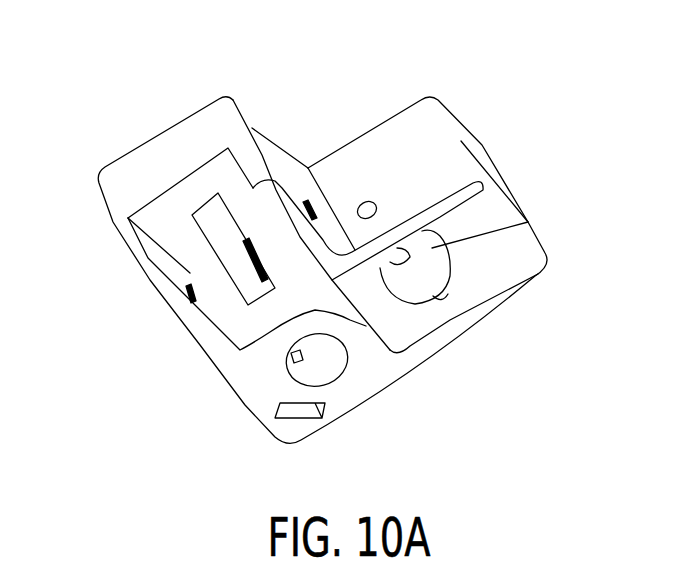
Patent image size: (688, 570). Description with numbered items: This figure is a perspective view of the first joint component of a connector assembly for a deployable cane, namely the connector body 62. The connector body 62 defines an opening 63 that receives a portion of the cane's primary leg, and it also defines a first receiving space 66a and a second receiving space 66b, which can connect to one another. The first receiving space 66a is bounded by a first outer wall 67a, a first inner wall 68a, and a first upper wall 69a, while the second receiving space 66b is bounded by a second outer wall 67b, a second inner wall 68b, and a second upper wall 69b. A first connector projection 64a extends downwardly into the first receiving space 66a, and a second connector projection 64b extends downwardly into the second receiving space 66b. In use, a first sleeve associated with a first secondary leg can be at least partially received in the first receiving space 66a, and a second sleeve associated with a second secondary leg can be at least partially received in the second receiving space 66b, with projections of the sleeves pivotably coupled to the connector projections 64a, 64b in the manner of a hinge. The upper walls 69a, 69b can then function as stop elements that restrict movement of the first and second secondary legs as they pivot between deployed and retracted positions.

The connector body 62 is at (250, 393).
The opening 63 is at (322, 372).
The first connector projection 64a is at (243, 283).
The second connector projection 64b is at (433, 275).
The first receiving space 66a is at (214, 165).
The second receiving space 66b is at (500, 240).
The first outer wall 67a is at (175, 317).
The second outer wall 67b is at (445, 335).
The first inner wall 68a is at (285, 170).
The second inner wall 68b is at (423, 167).
The first upper wall 69a is at (170, 207).
The second upper wall 69b is at (485, 212).